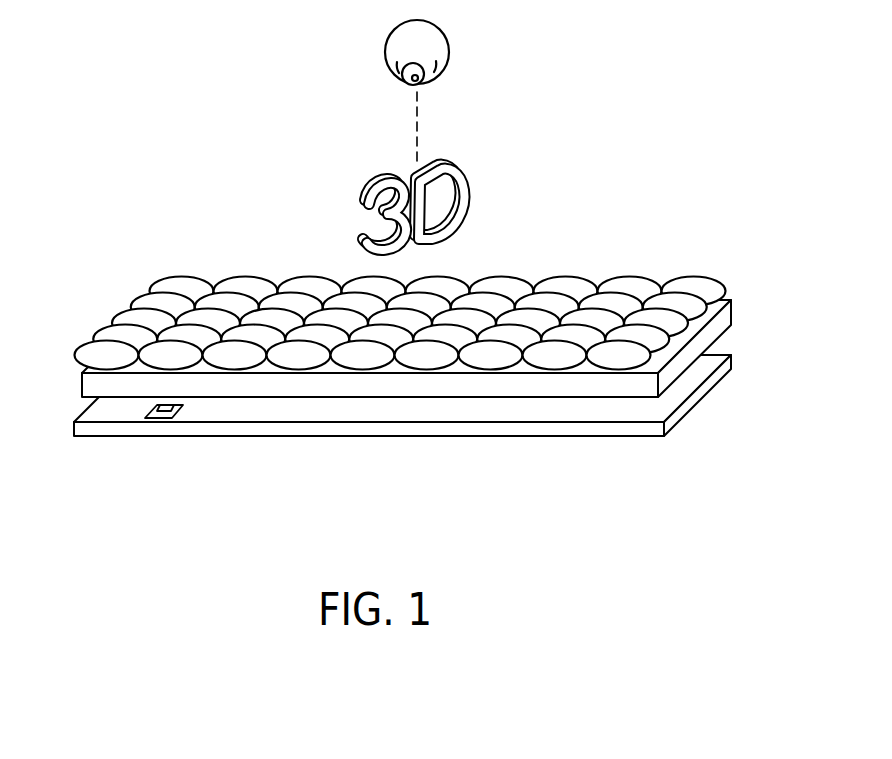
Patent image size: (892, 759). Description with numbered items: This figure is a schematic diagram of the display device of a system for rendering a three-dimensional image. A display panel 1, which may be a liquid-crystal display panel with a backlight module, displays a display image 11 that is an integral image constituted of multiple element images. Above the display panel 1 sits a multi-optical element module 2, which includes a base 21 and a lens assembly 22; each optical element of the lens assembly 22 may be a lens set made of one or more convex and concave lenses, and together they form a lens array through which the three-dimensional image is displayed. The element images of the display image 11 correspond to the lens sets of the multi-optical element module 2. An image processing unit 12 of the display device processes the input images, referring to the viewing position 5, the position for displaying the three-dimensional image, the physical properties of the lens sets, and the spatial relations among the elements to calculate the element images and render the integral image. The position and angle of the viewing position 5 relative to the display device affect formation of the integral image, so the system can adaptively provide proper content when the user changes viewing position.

The display panel 1 is at (417, 424).
The display image 11 is at (574, 410).
The image processing unit 12 is at (161, 423).
The multi-optical element module 2 is at (436, 306).
The base 21 is at (713, 329).
The lens assembly 22 is at (695, 288).
The viewing position 5 is at (456, 41).